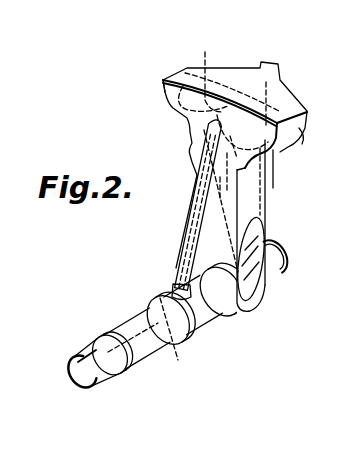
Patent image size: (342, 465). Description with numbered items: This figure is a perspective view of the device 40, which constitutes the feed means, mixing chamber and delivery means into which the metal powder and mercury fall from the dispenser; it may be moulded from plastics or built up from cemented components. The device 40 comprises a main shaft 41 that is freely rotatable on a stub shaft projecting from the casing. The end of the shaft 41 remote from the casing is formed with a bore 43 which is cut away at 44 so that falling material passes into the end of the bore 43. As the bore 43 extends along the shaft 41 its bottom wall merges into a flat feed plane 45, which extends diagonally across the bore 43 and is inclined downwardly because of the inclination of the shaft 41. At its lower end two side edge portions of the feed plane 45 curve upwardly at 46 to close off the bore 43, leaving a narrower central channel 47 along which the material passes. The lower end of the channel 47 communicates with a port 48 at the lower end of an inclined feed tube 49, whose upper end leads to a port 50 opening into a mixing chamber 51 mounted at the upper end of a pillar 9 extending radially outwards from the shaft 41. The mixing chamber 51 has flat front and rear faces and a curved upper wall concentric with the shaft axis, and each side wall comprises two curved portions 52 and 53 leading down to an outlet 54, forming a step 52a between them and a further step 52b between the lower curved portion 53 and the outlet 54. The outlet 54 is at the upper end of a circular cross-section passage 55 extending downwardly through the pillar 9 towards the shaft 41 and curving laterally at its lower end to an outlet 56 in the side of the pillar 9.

The pillar 9 is at (245, 200).
The device 40 is at (298, 148).
The main shaft 41 is at (198, 325).
The bore 43 is at (102, 350).
The cut away 44 is at (78, 366).
The feed plane 45 is at (137, 342).
The upwardly curved side edge portions 46 is at (152, 310).
The central channel 47 is at (160, 298).
The port 48 is at (232, 310).
The feed tube 49 is at (195, 228).
The port 50 is at (198, 145).
The mixing chamber 51 is at (239, 116).
The curved portion 52 is at (163, 80).
The step 52a is at (210, 64).
The step 52b is at (258, 172).
The curved portion 53 is at (199, 134).
The outlet 54 is at (262, 165).
The passage 55 is at (225, 188).
The outlet 56 is at (256, 252).